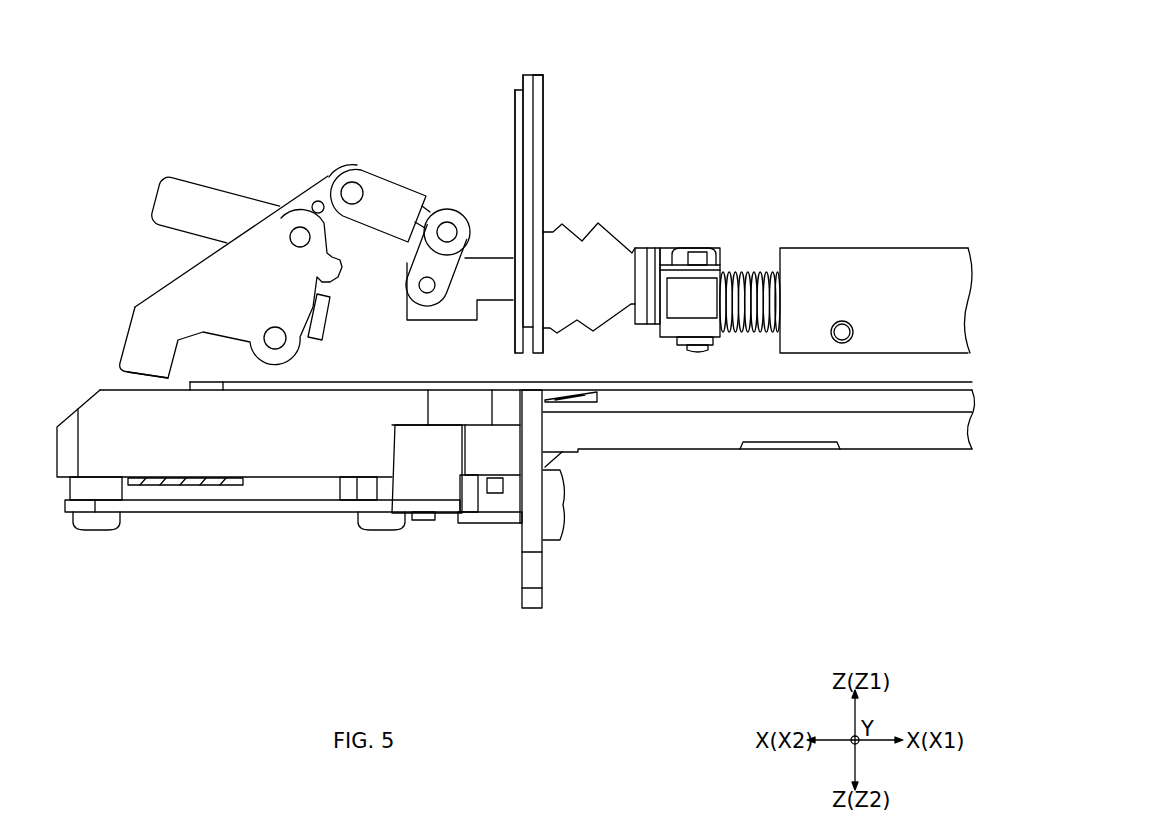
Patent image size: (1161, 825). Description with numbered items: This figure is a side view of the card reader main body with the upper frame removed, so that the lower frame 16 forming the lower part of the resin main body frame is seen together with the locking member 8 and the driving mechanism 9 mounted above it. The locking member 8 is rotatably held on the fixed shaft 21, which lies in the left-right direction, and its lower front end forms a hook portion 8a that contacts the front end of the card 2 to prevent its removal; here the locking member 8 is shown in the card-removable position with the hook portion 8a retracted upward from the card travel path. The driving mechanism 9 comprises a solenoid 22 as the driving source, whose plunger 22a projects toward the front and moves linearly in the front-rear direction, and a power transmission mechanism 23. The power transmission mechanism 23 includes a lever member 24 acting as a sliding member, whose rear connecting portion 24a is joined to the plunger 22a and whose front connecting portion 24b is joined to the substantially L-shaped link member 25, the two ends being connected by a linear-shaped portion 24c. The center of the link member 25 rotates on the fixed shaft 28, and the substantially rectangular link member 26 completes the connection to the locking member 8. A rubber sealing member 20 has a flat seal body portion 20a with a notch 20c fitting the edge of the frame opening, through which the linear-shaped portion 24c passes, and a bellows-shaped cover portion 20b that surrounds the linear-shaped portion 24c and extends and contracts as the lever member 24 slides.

The card 2 is at (363, 380).
The locking member 8 is at (145, 300).
The hook portion 8a is at (148, 378).
The driving mechanism 9 is at (765, 140).
The lower frame 16 is at (701, 450).
The sealing member 20 is at (544, 88).
The seal body portion 20a is at (590, 209).
The cover portion 20b is at (596, 226).
The notch 20c is at (528, 116).
The fixed shaft 21 is at (272, 326).
The solenoid 22 is at (879, 248).
The plunger 22a is at (748, 272).
The power transmission mechanism 23 is at (350, 82).
The lever member 24 is at (700, 247).
The connecting portion 24a is at (696, 231).
The connecting portion 24b is at (443, 323).
The linear-shaped portion 24c is at (494, 303).
The link member 25 is at (398, 178).
The link member 26 is at (303, 192).
The fixed shaft 28 is at (449, 226).